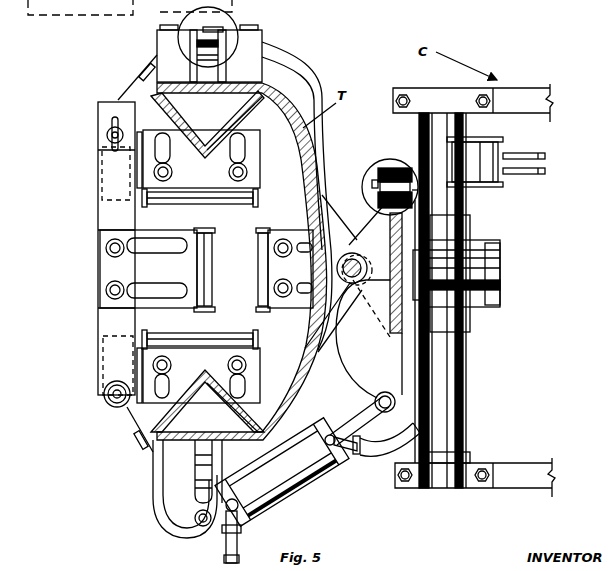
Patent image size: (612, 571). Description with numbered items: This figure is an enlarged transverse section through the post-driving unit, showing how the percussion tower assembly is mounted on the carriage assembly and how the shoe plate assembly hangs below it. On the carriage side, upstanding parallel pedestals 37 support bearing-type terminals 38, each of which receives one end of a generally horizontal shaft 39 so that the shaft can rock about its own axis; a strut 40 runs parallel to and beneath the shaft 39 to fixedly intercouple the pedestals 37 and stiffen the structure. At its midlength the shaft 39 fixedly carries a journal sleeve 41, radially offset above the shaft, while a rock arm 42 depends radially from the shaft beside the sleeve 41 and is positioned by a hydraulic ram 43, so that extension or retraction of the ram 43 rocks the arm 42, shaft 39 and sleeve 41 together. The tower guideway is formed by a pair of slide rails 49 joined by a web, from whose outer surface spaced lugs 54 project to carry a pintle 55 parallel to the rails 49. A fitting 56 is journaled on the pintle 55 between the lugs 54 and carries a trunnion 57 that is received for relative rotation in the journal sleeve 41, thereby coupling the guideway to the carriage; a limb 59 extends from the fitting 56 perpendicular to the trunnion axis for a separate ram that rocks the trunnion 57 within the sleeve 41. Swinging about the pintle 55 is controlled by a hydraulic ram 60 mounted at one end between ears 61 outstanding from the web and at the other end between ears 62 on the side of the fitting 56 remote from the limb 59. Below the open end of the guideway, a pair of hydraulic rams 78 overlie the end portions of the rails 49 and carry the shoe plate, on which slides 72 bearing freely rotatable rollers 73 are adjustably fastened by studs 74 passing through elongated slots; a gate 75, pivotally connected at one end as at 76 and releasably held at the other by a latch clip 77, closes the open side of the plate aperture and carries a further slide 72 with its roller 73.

The pedestals 37 is at (532, 80).
The bearing-type terminals 38 is at (468, 490).
The shaft 39 is at (447, 368).
The strut 40 is at (418, 358).
The journal sleeve 41 is at (495, 265).
The rock arm 42 is at (492, 185).
The hydraulic ram 43 is at (538, 153).
The slide rails 49 is at (236, 105).
The lugs 54 is at (338, 234).
The pintle 55 is at (333, 347).
The fitting 56 is at (384, 251).
The trunnion 57 is at (418, 270).
The limb 59 is at (390, 160).
The hydraulic ram 60 is at (310, 470).
The ears 61 is at (180, 499).
The ears 62 is at (377, 347).
The slides 72 is at (210, 179).
The rollers 73 is at (215, 200).
The studs 74 is at (181, 164).
The gate 75 is at (100, 210).
The pivotal connection 76 is at (105, 393).
The latch clip 77 is at (125, 183).
The hydraulic rams 78 is at (222, 24).